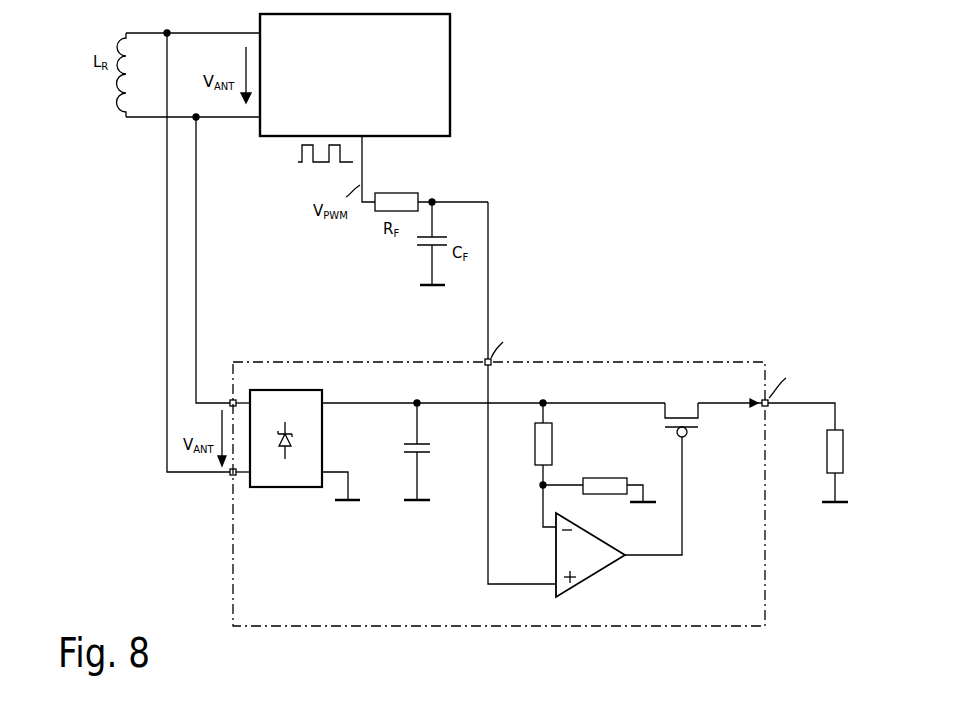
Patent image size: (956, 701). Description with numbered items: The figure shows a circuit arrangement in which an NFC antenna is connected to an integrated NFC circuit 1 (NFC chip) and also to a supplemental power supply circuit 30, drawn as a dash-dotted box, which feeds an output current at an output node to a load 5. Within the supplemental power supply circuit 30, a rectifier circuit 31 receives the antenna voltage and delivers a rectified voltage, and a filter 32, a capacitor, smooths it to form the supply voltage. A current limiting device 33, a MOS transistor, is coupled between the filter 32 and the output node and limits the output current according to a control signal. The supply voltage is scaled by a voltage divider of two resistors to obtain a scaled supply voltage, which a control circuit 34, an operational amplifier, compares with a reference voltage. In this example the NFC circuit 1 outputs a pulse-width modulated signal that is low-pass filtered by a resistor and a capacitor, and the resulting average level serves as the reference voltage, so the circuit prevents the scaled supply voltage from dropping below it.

The NFC circuit 1 is at (355, 75).
The load 5 is at (845, 445).
The supplemental power supply circuit 30 is at (517, 414).
The rectifier circuit 31 is at (272, 488).
The filter 32 is at (410, 462).
The current limiting device 33 is at (683, 401).
The control circuit 34 is at (597, 578).